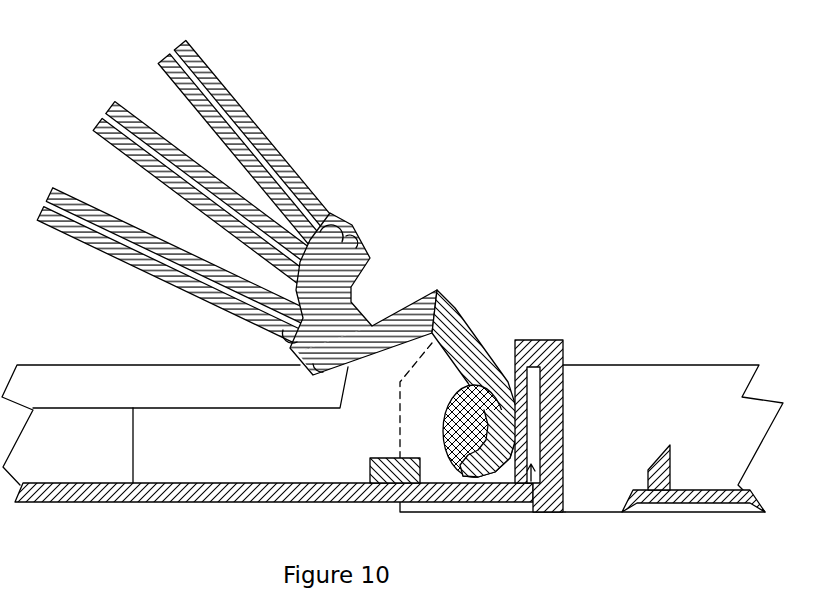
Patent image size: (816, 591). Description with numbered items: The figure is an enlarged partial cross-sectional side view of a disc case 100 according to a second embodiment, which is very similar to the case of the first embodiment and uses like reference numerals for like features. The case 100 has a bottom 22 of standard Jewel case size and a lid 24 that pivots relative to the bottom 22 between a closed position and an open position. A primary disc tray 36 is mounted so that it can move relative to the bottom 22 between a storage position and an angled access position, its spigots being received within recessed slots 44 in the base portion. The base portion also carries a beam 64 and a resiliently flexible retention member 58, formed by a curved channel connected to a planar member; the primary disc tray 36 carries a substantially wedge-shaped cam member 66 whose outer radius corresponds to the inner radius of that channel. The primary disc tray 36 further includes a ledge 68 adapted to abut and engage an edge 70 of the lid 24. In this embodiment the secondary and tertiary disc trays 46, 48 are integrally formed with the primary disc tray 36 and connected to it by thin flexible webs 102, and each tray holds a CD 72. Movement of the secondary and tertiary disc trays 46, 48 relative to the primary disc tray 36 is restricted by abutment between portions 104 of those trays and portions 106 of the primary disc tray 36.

The case 100 is at (451, 103).
The bottom 22 is at (233, 483).
The lid 24 is at (677, 492).
The primary disc tray 36 is at (410, 318).
The recessed slots 44 is at (450, 383).
The secondary disc tray 46 is at (145, 167).
The tertiary disc tray 48 is at (62, 235).
The retention member 58 is at (534, 506).
The beam 64 is at (392, 458).
The cam member 66 is at (460, 470).
The ledge 68 is at (432, 292).
The edge 70 is at (632, 492).
The CD 72 is at (258, 123).
The flexible webs 102 is at (340, 232).
The portions of the secondary and tertiary disc trays 104 is at (305, 215).
The portions of the primary disc tray 106 is at (353, 242).